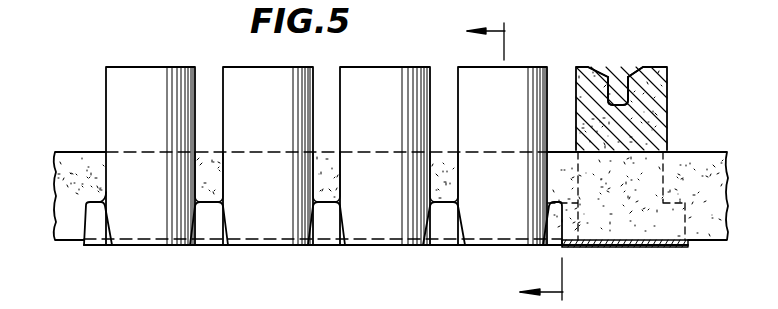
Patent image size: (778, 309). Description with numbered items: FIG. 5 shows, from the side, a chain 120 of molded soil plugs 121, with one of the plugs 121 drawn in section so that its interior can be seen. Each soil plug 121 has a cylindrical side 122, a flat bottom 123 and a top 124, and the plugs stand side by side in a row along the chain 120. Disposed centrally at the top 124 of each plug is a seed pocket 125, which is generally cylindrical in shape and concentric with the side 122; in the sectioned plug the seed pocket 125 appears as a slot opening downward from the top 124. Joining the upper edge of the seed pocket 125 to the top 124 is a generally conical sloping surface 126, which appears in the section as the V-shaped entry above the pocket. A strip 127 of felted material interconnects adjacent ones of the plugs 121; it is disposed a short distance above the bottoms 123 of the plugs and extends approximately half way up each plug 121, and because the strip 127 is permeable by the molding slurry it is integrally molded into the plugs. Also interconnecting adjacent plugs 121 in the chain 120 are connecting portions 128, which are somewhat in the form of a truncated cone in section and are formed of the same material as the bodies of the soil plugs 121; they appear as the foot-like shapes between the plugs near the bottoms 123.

The chain 120 is at (140, 49).
The soil plug 121 is at (462, 67).
The cylindrical side 122 is at (141, 122).
The flat bottom 123 is at (620, 248).
The top 124 is at (189, 67).
The seed pocket 125 is at (624, 78).
The conical sloping surface 126 is at (596, 67).
The strip of felted material 127 is at (77, 160).
The connecting portion 128 is at (440, 228).